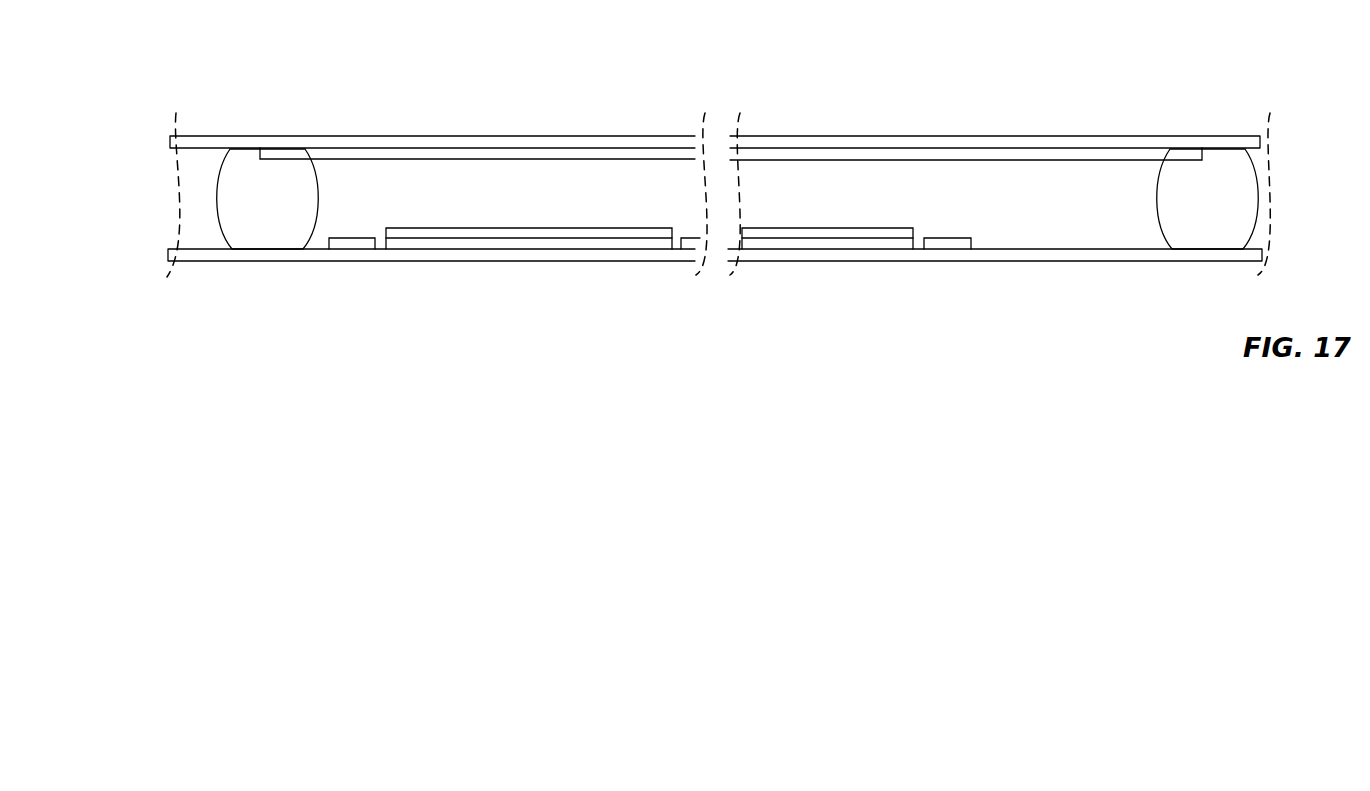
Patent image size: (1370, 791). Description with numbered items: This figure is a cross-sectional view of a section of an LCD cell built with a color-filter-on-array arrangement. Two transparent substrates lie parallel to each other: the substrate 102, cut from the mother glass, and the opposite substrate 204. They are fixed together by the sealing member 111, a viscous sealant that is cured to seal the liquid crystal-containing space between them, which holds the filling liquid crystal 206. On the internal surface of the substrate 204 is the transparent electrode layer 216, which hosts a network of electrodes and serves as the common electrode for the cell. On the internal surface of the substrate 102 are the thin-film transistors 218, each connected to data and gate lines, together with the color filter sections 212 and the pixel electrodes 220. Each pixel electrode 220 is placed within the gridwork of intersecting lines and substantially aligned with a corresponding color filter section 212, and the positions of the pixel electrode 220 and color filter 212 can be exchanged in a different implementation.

The substrate 102 is at (190, 260).
The sealing member 111 is at (238, 193).
The substrate 204 is at (215, 135).
The transparent electrode layer 216 is at (390, 156).
The filling liquid crystal 206 is at (569, 214).
The color filter section 212 is at (500, 242).
The thin-film transistor 218 is at (363, 243).
The pixel electrode 220 is at (550, 232).